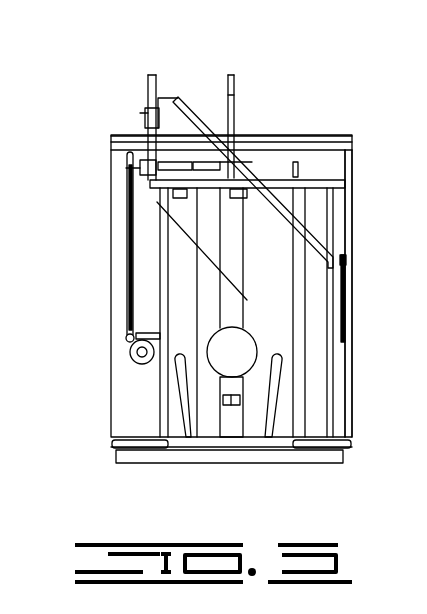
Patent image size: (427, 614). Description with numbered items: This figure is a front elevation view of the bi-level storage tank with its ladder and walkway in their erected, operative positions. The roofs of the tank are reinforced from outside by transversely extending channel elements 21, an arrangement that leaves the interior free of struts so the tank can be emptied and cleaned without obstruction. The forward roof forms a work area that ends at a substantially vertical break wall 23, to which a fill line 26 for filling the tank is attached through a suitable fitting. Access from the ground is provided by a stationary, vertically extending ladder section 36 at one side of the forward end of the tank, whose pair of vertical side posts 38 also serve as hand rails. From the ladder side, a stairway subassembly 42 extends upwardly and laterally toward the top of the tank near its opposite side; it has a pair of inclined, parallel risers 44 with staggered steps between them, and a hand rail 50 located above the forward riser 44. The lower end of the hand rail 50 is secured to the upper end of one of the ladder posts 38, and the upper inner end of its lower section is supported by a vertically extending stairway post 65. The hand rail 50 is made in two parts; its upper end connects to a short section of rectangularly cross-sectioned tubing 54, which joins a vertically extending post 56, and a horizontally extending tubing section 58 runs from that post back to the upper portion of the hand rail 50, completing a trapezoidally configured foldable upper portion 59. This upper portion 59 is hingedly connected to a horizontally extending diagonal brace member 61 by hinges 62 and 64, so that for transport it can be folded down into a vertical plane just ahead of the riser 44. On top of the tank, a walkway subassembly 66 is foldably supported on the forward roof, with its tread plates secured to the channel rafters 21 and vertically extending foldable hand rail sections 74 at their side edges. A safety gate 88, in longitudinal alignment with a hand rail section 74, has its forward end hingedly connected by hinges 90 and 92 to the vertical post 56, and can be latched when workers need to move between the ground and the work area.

The channel elements 21 is at (338, 140).
The break wall 23 is at (308, 148).
The fill line 26 is at (128, 292).
The ladder section 36 is at (337, 362).
The vertical side posts 38 is at (330, 407).
The stairway subassembly 42 is at (320, 229).
The risers 44 is at (235, 232).
The hand rail 50 is at (312, 182).
The rectangularly cross-sectioned tubing 54 is at (157, 96).
The vertically extending post 56 is at (159, 128).
The horizontally extending tubing section 58 is at (170, 194).
The foldable upper portion 59 is at (256, 162).
The diagonal brace member 61 is at (347, 257).
The hinge 62 is at (228, 199).
The hinge 64 is at (225, 260).
The stairway post 65 is at (330, 312).
The walkway subassembly 66 is at (234, 96).
The foldable hand rail sections 74 is at (232, 76).
The safety gate 88 is at (148, 101).
The hinge 90 is at (140, 113).
The hinge 92 is at (126, 169).